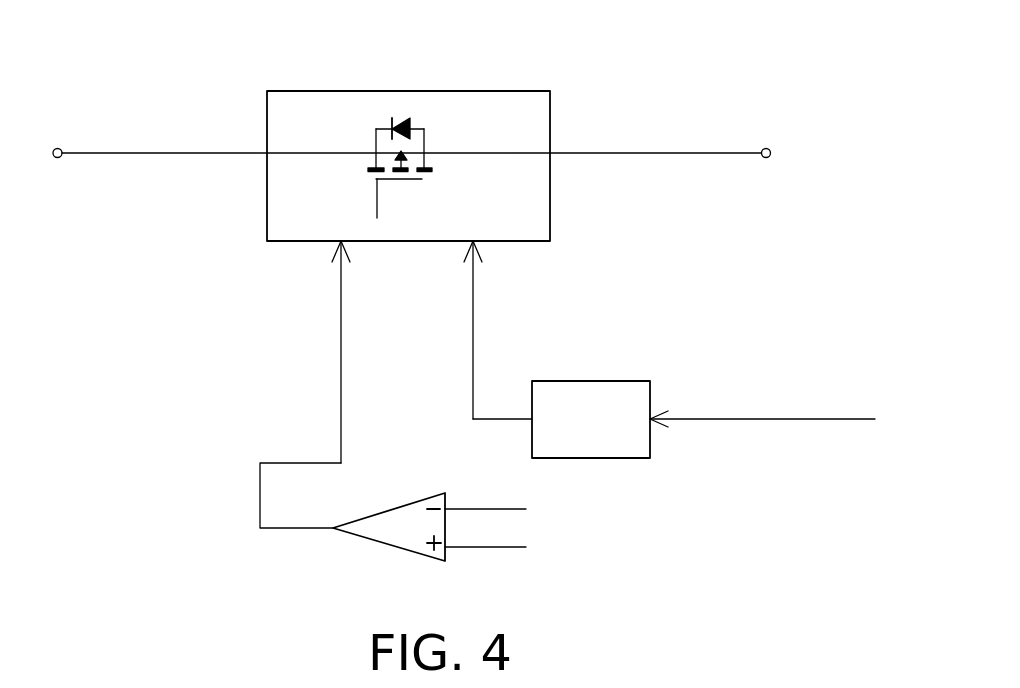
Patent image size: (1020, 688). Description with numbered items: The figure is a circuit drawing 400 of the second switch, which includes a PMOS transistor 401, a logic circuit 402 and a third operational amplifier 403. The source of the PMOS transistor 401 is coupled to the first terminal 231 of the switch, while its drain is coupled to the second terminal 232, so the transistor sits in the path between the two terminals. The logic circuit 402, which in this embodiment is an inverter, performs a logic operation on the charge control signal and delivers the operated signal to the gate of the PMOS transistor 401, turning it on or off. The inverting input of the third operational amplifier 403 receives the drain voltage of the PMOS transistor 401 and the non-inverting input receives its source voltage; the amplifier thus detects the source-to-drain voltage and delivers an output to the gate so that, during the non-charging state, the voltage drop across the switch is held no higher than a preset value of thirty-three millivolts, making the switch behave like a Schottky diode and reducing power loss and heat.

The circuit drawing 400 is at (128, 59).
The PMOS transistor 401 is at (482, 91).
The logic circuit 402 is at (650, 392).
The third operational amplifier 403 is at (407, 549).
The first terminal 231 is at (35, 154).
The second terminal 232 is at (792, 154).